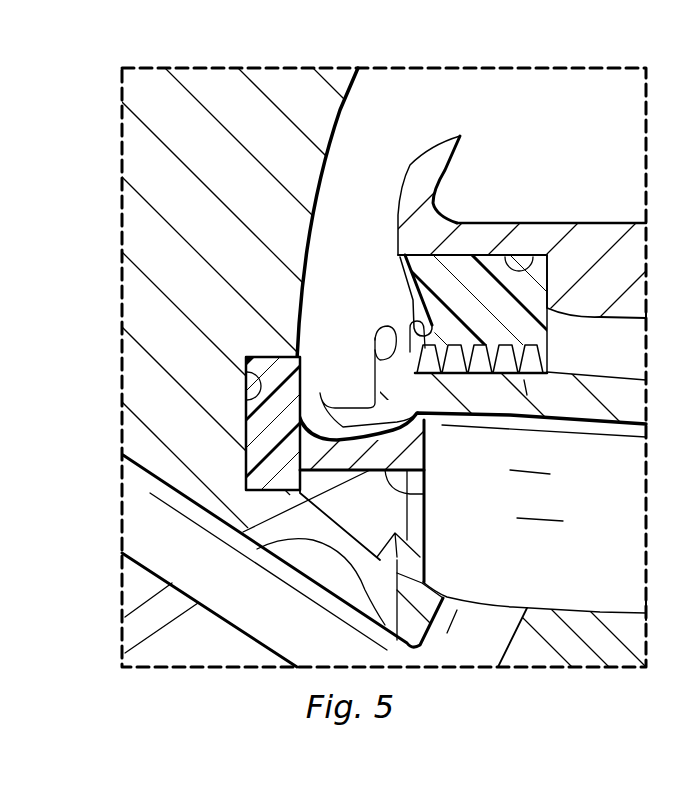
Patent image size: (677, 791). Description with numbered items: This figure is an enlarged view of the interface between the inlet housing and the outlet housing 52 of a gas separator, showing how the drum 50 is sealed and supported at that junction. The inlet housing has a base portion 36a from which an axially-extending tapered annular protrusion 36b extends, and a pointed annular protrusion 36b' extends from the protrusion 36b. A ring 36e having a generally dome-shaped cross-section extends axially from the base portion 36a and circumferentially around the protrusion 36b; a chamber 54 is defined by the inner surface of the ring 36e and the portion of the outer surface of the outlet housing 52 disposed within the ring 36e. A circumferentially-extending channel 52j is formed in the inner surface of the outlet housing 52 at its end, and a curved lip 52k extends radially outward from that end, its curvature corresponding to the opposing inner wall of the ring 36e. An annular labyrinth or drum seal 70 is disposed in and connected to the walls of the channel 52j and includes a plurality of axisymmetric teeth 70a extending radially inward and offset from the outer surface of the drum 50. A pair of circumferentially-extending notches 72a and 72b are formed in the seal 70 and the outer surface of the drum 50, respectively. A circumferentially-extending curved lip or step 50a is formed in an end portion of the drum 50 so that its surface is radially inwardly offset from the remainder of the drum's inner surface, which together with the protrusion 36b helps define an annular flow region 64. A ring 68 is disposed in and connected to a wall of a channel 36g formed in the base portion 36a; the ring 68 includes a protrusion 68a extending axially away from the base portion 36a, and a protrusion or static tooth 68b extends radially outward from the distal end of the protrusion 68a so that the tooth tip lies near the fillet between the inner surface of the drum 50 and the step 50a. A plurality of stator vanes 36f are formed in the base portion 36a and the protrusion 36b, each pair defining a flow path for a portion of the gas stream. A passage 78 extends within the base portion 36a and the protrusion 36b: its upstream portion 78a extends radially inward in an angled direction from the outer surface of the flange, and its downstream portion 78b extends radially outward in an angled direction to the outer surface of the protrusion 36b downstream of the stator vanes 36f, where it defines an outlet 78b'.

The ring 36e is at (282, 83).
The curved lip 52k is at (460, 138).
The chamber 54 is at (556, 127).
The circumferentially-extending channel 52j is at (533, 257).
The outlet housing 52 is at (600, 225).
The labyrinth or drum seal 70 is at (417, 253).
The circumferentially-extending notch 72a is at (410, 297).
The circumferentially-extending notch 72b is at (380, 327).
The drum 50 is at (593, 377).
The axisymmetric teeth 70a is at (527, 395).
The channel 36g is at (247, 400).
The ring 68 is at (247, 467).
The protrusion or static tooth 68b is at (427, 437).
The protrusion 68a is at (426, 490).
The curved lip or step 50a is at (358, 471).
The pointed annular protrusion 36b' is at (439, 501).
The annular flow region 64 is at (578, 526).
The passage 78 is at (238, 622).
The upstream portion 78a is at (152, 477).
The base portion 36a is at (137, 590).
The stator vanes 36f is at (218, 652).
The axially-extending tapered annular protrusion 36b is at (338, 395).
The outlet 78b' is at (531, 610).
The downstream portion 78b is at (487, 684).